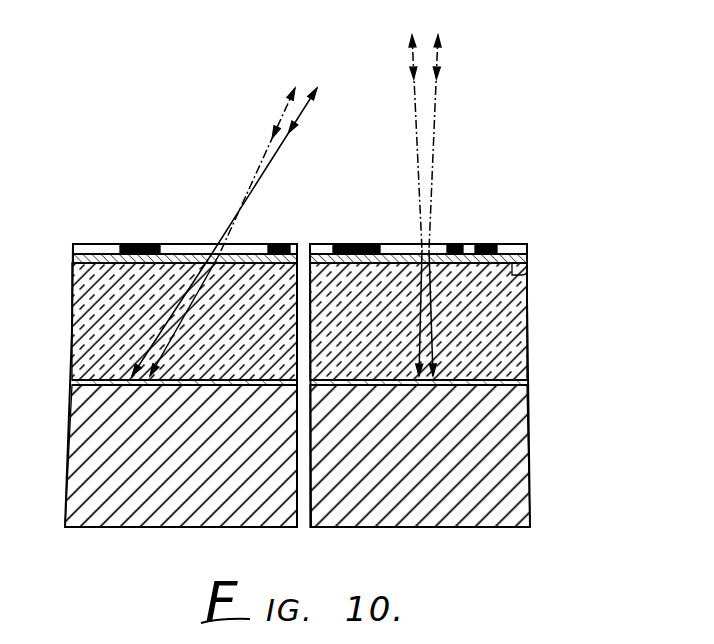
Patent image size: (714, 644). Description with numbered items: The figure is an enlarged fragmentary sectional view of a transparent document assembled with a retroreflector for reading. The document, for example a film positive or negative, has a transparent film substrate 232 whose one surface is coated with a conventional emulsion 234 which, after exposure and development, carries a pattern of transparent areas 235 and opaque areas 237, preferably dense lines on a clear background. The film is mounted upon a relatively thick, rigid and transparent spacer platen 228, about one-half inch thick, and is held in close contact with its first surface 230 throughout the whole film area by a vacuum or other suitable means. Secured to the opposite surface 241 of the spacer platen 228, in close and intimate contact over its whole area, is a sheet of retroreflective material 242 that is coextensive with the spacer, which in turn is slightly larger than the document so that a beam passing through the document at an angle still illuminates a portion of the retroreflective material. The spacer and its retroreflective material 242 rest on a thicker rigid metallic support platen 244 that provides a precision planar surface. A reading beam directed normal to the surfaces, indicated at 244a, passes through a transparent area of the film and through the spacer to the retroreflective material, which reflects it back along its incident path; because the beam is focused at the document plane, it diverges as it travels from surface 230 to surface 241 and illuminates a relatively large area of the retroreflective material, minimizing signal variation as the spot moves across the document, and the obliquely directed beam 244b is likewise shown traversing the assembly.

The transparent spacer platen 228 is at (523, 318).
The first surface 230 is at (530, 277).
The transparent film substrate 232 is at (526, 262).
The emulsion 234 is at (511, 244).
The transparent areas 235 is at (323, 243).
The opaque areas 237 is at (136, 243).
The opposite surface 241 is at (515, 381).
The sheet of retroreflective material 242 is at (490, 386).
The support platen 244 is at (528, 450).
The reading beam directed normal to the surface 244a is at (440, 145).
The oblique light ray 244b is at (256, 164).